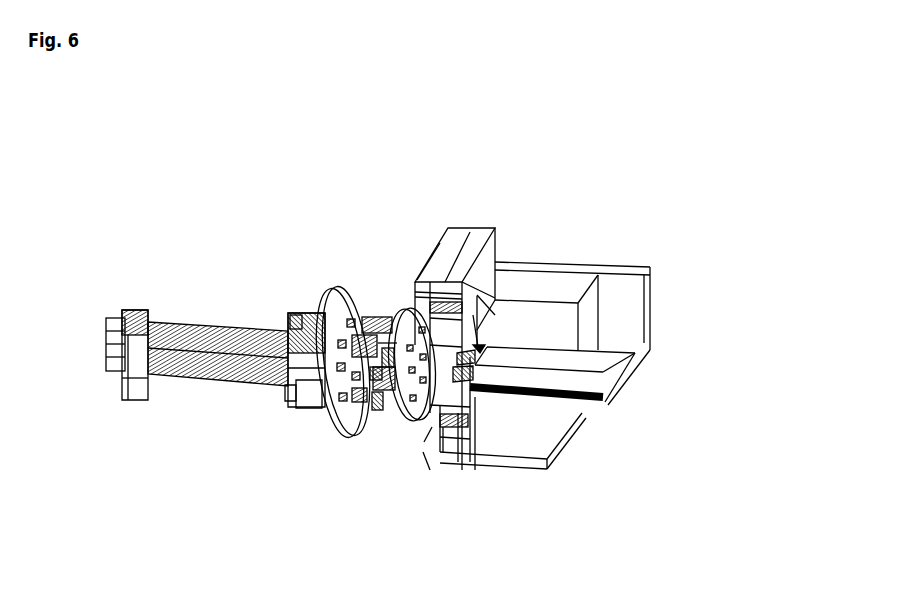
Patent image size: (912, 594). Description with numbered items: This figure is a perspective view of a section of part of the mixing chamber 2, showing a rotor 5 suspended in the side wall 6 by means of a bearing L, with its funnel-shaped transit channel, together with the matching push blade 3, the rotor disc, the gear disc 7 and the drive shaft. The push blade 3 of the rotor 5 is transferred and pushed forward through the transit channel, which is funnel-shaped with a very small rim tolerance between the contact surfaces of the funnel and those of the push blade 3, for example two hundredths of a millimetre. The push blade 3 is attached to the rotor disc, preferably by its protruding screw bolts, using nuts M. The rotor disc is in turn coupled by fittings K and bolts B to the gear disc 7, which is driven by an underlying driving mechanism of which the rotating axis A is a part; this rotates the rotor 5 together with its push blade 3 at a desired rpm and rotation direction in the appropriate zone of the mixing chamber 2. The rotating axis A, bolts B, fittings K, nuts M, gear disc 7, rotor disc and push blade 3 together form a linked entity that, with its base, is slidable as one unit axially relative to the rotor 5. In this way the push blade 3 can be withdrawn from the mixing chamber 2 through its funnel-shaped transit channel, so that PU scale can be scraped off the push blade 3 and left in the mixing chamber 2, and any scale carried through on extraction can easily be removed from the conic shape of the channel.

The rotating axis A is at (168, 303).
The bolts B is at (262, 294).
The fittings K is at (387, 277).
The bearing L is at (385, 283).
The nuts M is at (380, 378).
The mixing chamber 2 is at (588, 411).
The push blade 3 is at (655, 340).
The rotor 5 is at (462, 337).
The side wall 6 is at (468, 200).
The gear disc 7 is at (287, 434).